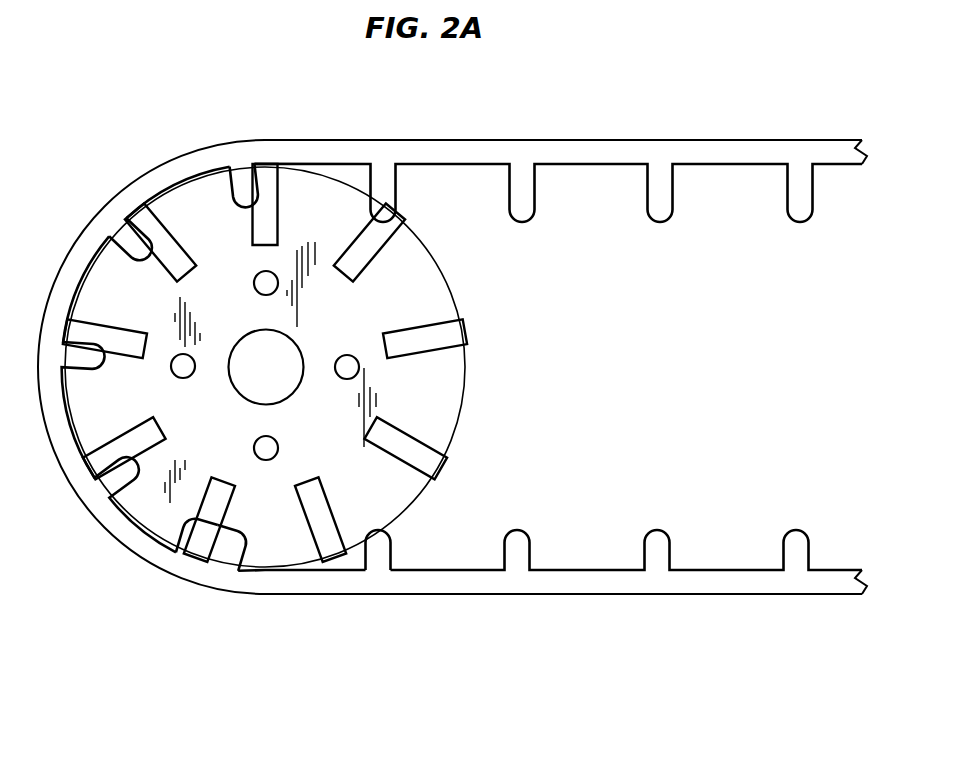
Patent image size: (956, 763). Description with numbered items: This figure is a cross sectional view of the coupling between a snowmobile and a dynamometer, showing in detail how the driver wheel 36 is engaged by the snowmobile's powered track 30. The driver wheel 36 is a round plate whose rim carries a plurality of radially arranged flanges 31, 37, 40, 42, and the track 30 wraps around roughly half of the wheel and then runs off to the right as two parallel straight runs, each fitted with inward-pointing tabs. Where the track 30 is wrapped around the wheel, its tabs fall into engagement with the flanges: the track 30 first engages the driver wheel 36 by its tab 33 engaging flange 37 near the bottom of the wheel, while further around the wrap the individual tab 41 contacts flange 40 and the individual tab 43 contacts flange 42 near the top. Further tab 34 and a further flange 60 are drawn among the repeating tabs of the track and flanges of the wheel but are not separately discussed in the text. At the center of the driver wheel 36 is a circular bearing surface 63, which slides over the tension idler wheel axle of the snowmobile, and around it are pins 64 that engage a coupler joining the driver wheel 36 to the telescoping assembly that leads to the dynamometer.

The track 30 is at (634, 143).
The flange 31 is at (425, 457).
The tab 33 is at (233, 546).
The tooth 34 is at (381, 566).
The driver wheel 36 is at (420, 491).
The flange 37 is at (200, 526).
The flange 40 is at (160, 226).
The individual tab 41 is at (135, 248).
The flange 42 is at (268, 214).
The individual tab 43 is at (242, 184).
The slot 60 is at (400, 254).
The circular bearing surface 63 is at (246, 386).
The pins 64 is at (278, 448).